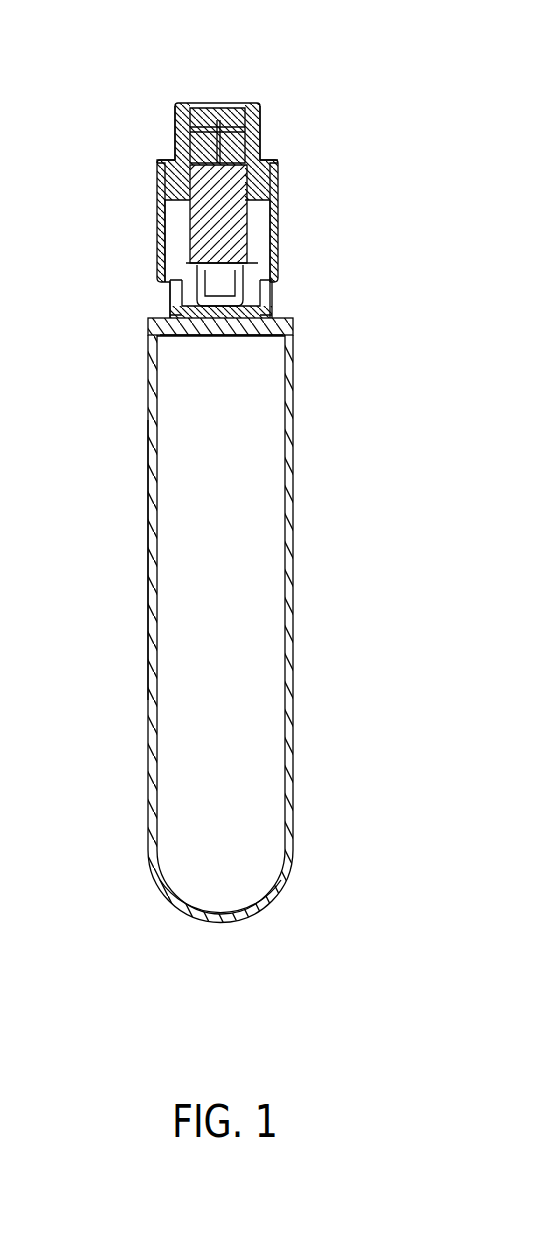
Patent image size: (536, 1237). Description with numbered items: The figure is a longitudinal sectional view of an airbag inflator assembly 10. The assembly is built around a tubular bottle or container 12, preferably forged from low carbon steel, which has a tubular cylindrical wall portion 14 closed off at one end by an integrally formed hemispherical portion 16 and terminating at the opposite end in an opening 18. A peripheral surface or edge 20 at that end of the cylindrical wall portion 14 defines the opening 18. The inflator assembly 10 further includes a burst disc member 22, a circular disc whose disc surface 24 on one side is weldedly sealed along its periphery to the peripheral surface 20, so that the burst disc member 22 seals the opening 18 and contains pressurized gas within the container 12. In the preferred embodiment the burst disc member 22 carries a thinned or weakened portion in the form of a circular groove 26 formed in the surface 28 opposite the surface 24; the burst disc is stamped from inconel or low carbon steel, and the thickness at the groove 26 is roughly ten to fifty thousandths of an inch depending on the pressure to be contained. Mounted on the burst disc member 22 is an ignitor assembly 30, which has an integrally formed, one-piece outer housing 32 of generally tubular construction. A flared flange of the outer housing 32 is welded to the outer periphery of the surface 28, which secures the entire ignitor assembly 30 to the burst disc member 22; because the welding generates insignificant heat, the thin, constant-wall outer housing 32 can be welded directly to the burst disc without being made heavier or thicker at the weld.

The airbag inflator assembly 10 is at (328, 50).
The container 12 is at (302, 531).
The tubular cylindrical wall portion 14 is at (149, 556).
The hemispherical portion 16 is at (268, 913).
The opening 18 is at (250, 352).
The peripheral surface 20 is at (211, 326).
The burst disc member 22 is at (284, 319).
The circular disc surface 24 is at (210, 336).
The circular groove 26 is at (171, 312).
The surface 28 is at (270, 284).
The ignitor assembly 30 is at (217, 210).
The outer housing 32 is at (162, 228).